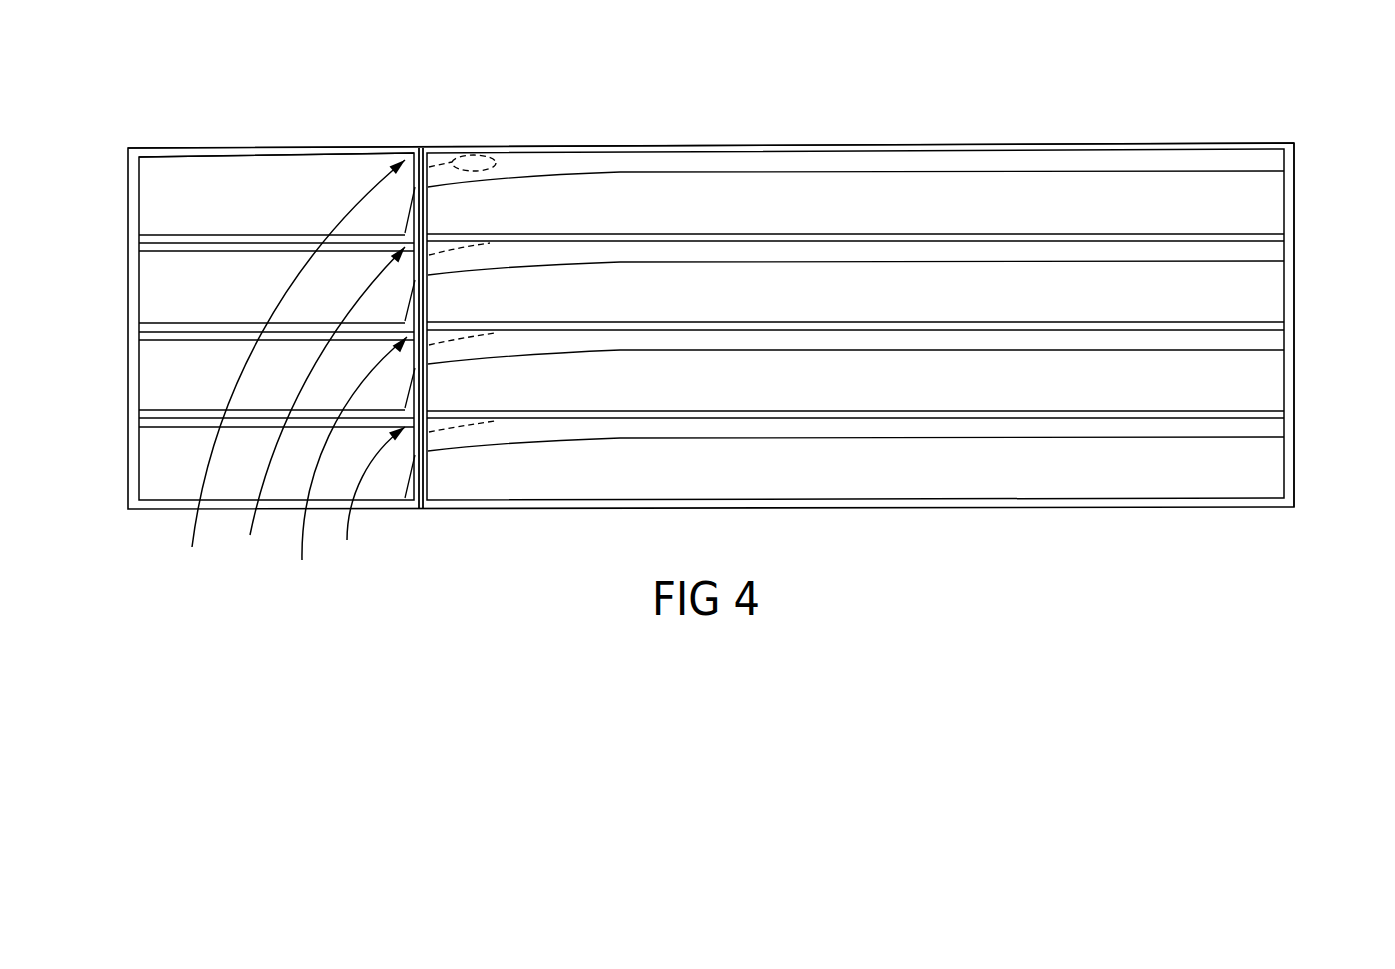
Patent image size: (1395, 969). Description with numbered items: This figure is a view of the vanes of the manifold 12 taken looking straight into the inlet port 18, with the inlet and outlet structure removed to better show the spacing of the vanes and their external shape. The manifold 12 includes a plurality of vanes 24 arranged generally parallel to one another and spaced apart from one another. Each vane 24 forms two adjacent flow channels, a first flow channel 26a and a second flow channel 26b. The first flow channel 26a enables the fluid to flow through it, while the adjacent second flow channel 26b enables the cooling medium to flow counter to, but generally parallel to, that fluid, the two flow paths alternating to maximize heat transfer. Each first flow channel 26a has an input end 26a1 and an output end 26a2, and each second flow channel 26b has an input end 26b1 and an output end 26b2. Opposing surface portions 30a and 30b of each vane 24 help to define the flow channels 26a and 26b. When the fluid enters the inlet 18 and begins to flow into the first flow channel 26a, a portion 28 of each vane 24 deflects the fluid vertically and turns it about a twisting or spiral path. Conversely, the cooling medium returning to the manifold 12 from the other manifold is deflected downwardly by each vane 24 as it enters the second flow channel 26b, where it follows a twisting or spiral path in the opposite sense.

The manifold 12 is at (848, 83).
The inlet port 18 is at (372, 148).
The vane 24 is at (385, 170).
The first flow channel 26a is at (362, 158).
The input end 26a1 is at (203, 194).
The output end 26a2 is at (1292, 138).
The second flow channel 26b is at (858, 216).
The input end 26b1 is at (1232, 190).
The output end 26b2 is at (403, 200).
The portion of vane 28 is at (285, 188).
The opposing surface portion 30a is at (250, 172).
The opposing surface portion 30b is at (497, 160).